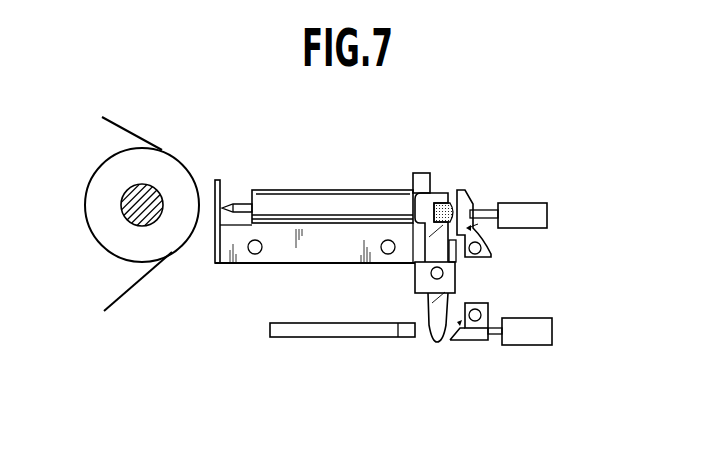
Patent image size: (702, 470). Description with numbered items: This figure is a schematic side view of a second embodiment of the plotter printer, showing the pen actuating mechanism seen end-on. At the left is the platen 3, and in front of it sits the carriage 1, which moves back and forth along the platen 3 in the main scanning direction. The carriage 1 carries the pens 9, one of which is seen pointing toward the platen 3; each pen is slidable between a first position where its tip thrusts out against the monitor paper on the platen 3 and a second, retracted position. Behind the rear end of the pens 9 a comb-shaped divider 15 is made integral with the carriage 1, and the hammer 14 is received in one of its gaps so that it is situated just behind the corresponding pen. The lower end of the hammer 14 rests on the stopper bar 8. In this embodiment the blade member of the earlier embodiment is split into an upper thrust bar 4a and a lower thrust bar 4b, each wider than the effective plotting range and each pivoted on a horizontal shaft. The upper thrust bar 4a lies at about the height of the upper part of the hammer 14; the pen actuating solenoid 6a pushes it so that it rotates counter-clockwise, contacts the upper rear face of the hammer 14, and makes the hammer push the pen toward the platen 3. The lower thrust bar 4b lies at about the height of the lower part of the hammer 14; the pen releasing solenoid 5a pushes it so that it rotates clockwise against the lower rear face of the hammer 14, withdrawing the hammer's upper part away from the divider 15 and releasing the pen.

The platen 3 is at (176, 166).
The carriage 1 is at (292, 255).
The pens 9 is at (326, 192).
The comb-shaped divider 15 is at (425, 185).
The hammer 14 is at (433, 253).
The stopper bar 8 is at (377, 338).
The upper thrust bar 4a is at (472, 202).
The pen actuating solenoid 6a is at (547, 211).
The lower thrust bar 4b is at (482, 315).
The pen releasing solenoid 5a is at (539, 345).